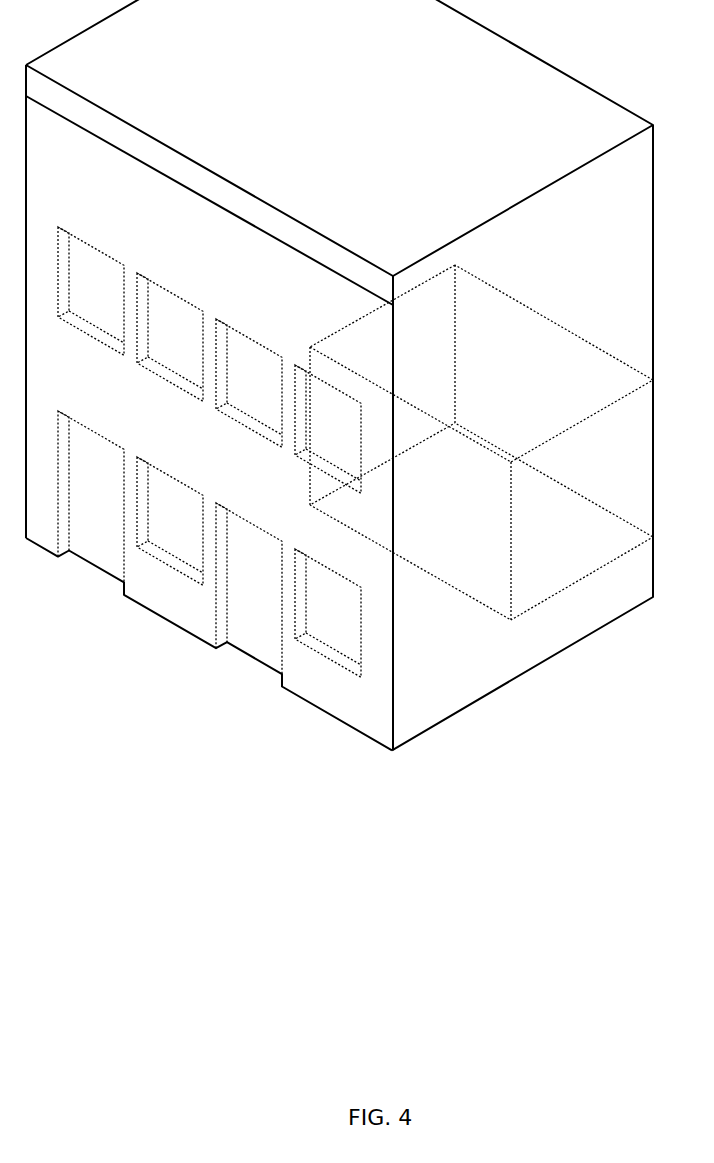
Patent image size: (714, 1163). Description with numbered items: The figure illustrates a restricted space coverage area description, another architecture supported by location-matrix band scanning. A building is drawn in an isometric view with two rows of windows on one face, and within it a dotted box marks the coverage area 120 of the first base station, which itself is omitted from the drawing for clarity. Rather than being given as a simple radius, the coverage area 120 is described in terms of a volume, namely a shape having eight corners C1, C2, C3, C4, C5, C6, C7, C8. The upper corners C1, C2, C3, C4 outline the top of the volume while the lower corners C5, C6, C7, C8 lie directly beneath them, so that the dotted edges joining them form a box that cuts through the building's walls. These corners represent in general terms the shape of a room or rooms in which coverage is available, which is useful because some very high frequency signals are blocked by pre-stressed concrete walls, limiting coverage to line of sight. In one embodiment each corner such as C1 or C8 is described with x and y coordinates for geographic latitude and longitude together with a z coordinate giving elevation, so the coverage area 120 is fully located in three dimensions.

The coverage area 120 is at (481, 442).
The corner C1 is at (554, 330).
The corner C2 is at (389, 306).
The corner C3 is at (410, 400).
The corner C4 is at (577, 421).
The corner C5 is at (582, 500).
The corner C6 is at (552, 401).
The corner C7 is at (382, 435).
The corner C8 is at (427, 541).